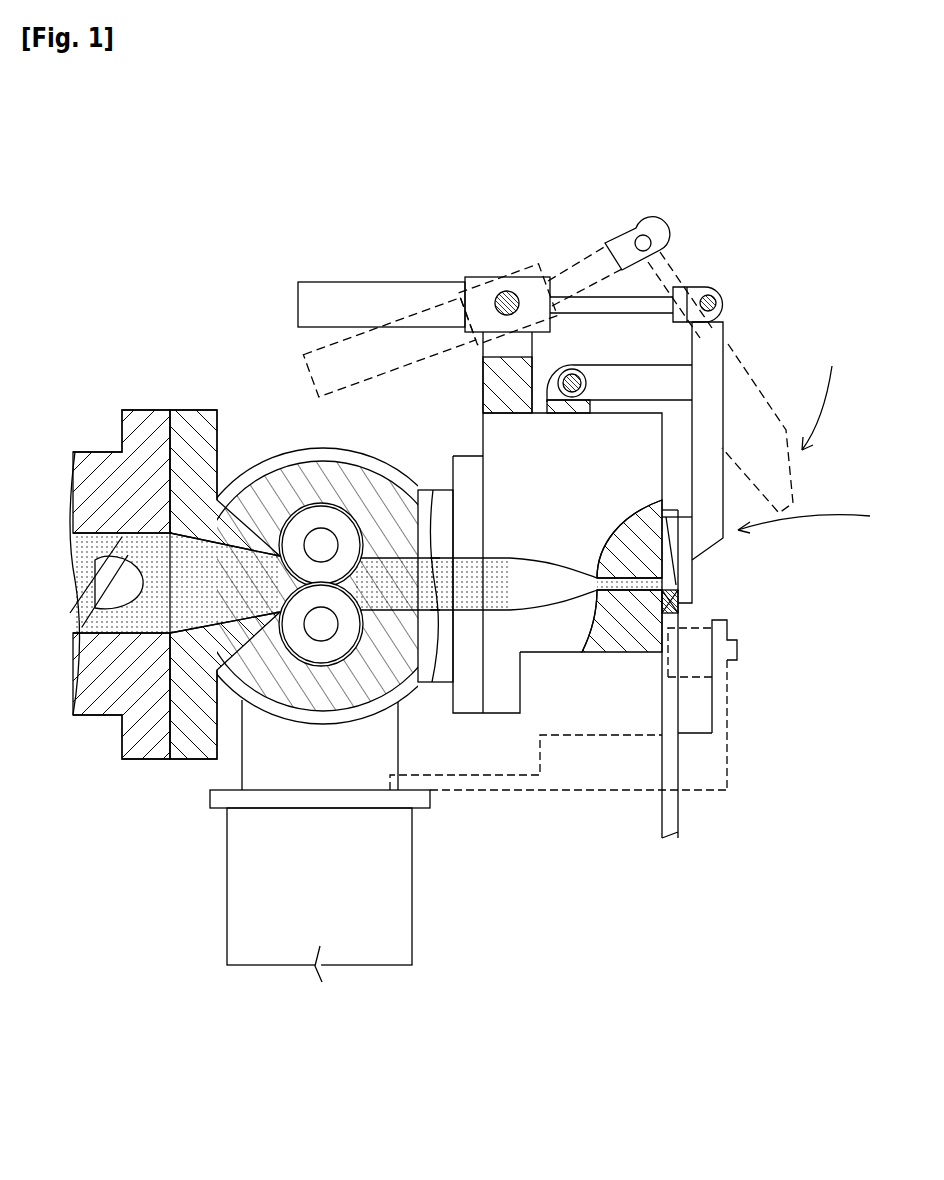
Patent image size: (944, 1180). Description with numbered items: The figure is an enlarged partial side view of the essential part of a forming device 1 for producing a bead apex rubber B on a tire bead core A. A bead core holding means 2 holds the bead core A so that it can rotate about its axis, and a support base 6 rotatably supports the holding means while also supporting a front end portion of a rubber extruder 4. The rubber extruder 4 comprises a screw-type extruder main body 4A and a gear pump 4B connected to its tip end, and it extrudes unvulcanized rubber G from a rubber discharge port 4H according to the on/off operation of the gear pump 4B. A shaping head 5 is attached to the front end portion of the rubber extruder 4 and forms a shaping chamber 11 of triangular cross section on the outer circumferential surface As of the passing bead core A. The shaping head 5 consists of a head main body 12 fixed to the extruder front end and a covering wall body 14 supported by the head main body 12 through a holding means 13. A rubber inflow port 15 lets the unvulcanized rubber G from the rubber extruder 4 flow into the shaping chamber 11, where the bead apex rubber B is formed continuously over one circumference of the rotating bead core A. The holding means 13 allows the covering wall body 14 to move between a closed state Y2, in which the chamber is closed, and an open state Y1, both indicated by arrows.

The forming device 1 is at (255, 253).
The rubber extruder 4 is at (215, 310).
The extruder main body 4A is at (103, 440).
The gear pump 4B is at (280, 440).
The rubber discharge port 4H is at (503, 530).
The unvulcanized rubber G is at (388, 588).
The holding means 13 is at (557, 240).
The shaping head 5 is at (806, 162).
The head main body 12 is at (612, 445).
The covering wall body 14 is at (674, 528).
The rubber inflow port 15 is at (632, 586).
The shaping chamber 11 is at (756, 674).
The bead apex rubber B is at (672, 584).
The outer circumferential surface As is at (678, 592).
The bead core A is at (670, 818).
The bead core holding means 2 is at (730, 705).
The support base 6 is at (415, 935).
The open state Y1 is at (823, 391).
The closed state Y2 is at (806, 514).